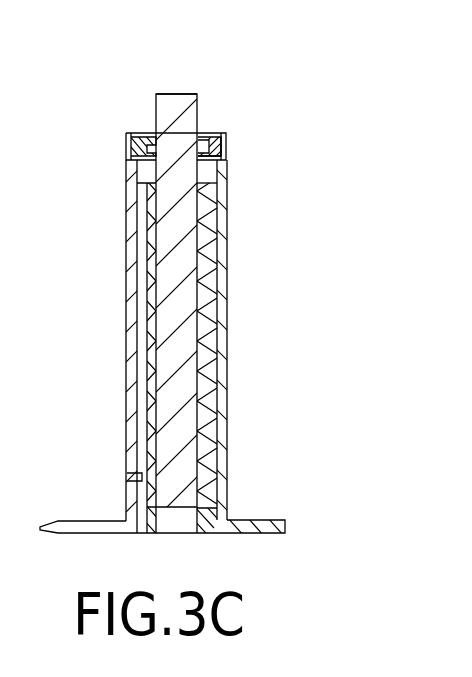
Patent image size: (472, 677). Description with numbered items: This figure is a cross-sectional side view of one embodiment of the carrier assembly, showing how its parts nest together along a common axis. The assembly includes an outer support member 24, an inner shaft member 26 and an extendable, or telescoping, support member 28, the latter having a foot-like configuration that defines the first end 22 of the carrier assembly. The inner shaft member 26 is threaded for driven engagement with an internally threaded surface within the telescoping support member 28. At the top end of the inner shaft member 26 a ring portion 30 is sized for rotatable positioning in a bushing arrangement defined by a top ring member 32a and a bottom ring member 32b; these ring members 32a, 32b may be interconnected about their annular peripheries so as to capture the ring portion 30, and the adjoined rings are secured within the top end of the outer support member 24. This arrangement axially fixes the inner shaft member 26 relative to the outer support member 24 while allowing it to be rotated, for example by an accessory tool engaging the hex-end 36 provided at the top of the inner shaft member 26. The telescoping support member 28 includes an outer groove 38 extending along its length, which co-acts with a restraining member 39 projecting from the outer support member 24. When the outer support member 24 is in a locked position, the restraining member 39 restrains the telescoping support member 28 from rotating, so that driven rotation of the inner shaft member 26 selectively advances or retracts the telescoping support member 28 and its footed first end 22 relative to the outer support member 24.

The first end 22 is at (268, 533).
The outer support member 24 is at (226, 317).
The inner shaft member 26 is at (196, 221).
The telescoping support member 28 is at (207, 420).
The ring portion 30 is at (148, 145).
The top ring member 32a is at (208, 135).
The bottom ring member 32b is at (220, 152).
The hex-end 36 is at (180, 93).
The outer groove 38 is at (140, 418).
The restraining member 39 is at (128, 476).